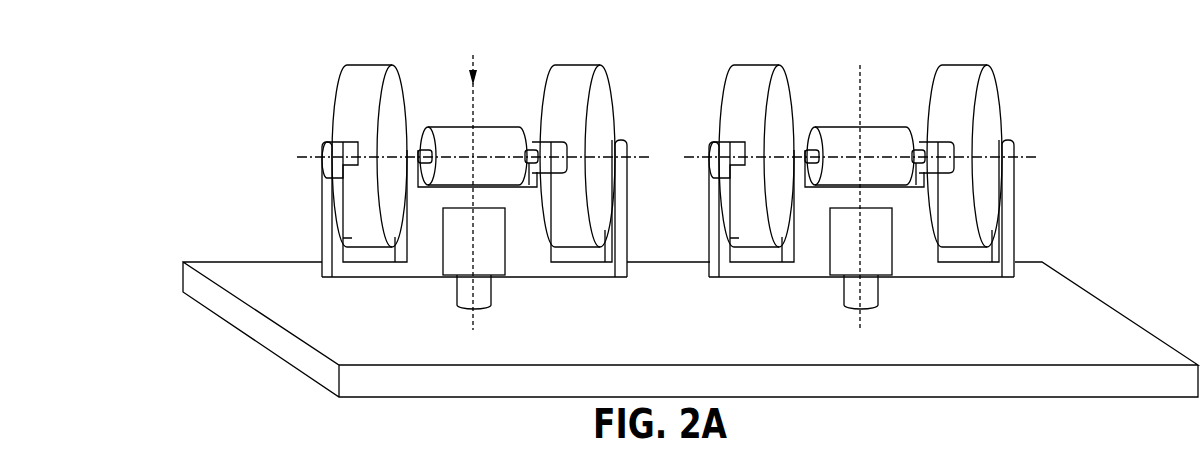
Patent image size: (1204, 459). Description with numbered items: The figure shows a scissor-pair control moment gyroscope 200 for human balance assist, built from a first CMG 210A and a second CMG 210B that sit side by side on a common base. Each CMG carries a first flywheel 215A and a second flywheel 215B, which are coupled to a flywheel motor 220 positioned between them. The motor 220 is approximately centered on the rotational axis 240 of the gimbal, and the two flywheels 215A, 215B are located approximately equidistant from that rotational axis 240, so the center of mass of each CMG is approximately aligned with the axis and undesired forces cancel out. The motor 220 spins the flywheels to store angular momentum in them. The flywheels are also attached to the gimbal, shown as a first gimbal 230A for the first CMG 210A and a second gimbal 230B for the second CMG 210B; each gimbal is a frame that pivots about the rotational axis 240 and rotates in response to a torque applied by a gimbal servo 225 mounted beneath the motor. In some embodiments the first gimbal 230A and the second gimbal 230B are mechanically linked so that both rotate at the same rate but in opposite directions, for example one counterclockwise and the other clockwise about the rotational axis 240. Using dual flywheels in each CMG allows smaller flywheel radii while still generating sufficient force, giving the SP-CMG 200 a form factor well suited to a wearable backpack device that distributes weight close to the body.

The scissor-pair control moment gyroscope 200 is at (183, 59).
The first CMG 210A is at (458, 182).
The second CMG 210B is at (891, 194).
The first flywheel 215A is at (337, 112).
The second flywheel 215B is at (600, 118).
The flywheel motor 220 is at (452, 125).
The gimbal servo 225 is at (494, 268).
The first gimbal 230A is at (585, 267).
The second gimbal 230B is at (973, 270).
The rotational axis 240 is at (474, 182).